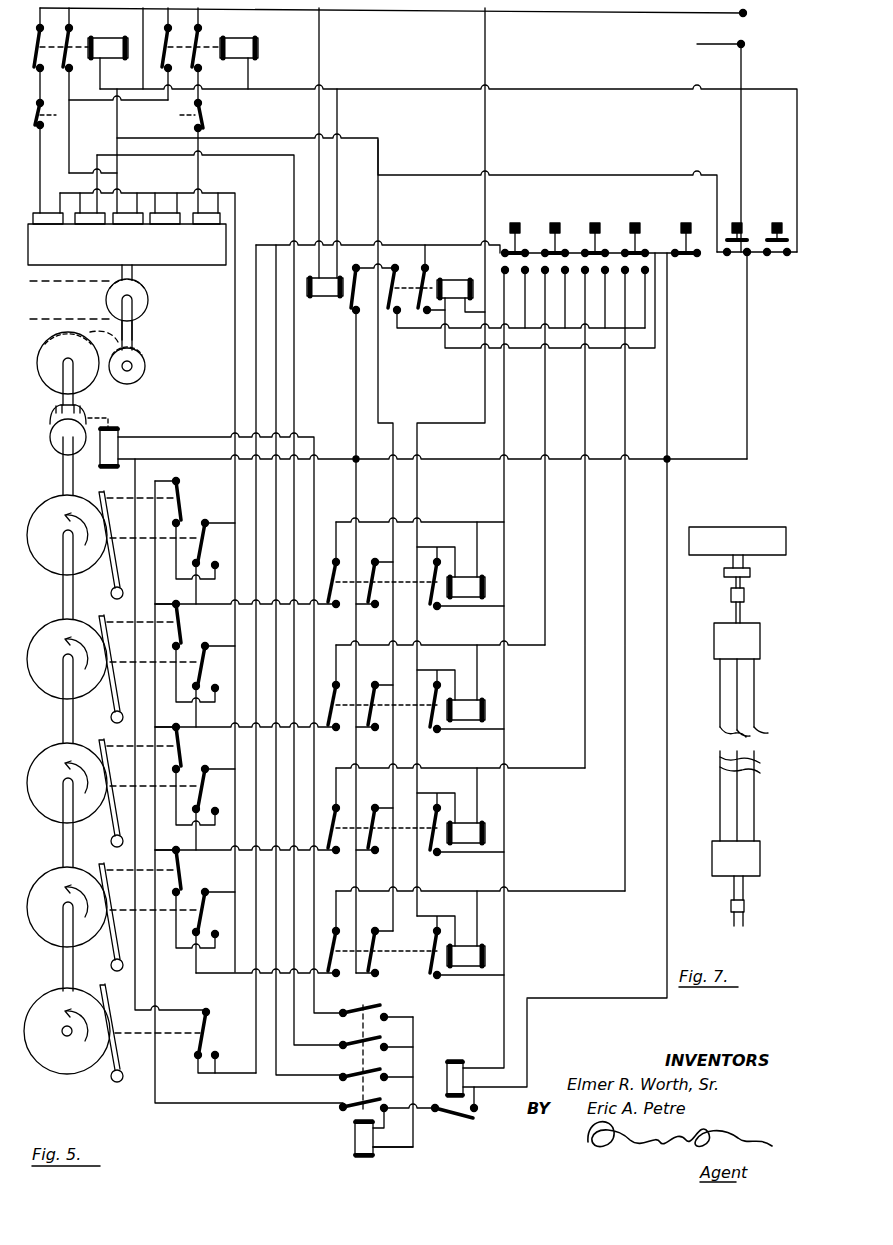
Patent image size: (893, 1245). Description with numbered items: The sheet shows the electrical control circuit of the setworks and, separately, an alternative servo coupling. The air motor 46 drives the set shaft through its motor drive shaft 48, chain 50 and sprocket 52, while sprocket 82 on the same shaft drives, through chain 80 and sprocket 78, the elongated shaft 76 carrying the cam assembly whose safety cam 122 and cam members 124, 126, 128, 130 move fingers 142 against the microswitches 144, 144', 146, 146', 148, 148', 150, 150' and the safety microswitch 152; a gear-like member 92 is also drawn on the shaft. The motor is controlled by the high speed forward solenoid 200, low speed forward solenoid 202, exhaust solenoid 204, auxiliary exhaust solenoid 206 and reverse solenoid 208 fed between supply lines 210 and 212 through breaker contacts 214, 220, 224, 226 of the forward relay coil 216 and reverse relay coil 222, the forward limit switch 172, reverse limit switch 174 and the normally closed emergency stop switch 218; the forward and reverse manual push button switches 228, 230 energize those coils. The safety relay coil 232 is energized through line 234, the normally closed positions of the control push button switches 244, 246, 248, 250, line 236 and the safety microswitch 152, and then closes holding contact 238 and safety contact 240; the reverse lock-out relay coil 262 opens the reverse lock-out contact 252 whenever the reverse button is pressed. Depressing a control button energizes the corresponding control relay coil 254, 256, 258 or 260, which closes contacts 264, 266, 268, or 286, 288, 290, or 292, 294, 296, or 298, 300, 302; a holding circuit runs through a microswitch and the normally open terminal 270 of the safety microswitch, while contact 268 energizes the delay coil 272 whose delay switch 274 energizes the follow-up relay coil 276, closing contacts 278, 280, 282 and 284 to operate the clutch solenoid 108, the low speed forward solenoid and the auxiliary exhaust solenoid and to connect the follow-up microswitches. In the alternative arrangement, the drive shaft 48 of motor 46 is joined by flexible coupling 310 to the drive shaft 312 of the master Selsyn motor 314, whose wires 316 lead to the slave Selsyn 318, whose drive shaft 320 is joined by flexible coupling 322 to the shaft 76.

In FIG. 5, the air motor 46 is at (200, 267).
In FIG. 7, the air motor 46 is at (774, 524).
In FIG. 5, the motor drive shaft 48 is at (137, 330).
In FIG. 7, the motor drive shaft 48 is at (750, 574).
In FIG. 5, the chain 50 is at (74, 280).
In FIG. 5, the sprocket 52 is at (146, 298).
In FIG. 5, the elongated shaft 76 is at (62, 392).
In FIG. 7, the elongated shaft 76 is at (732, 922).
In FIG. 5, the sprocket 78 is at (45, 372).
In FIG. 5, the chain 80 is at (95, 384).
In FIG. 5, the sprocket 82 is at (145, 365).
In FIG. 5, the clutch gear 92 is at (56, 450).
In FIG. 5, the clutch solenoid 108 is at (118, 437).
In FIG. 5, the safety cam 122 is at (50, 1066).
In FIG. 5, the cam member 124 is at (46, 937).
In FIG. 5, the cam member 126 is at (46, 815).
In FIG. 5, the cam member 128 is at (46, 690).
In FIG. 5, the cam member 130 is at (46, 568).
In FIG. 5, the finger 142 is at (112, 570).
In FIG. 5, the microswitch 144 is at (216, 919).
In FIG. 5, the microswitch 144' is at (190, 895).
In FIG. 5, the microswitch 146 is at (216, 796).
In FIG. 5, the microswitch 146' is at (190, 772).
In FIG. 5, the microswitch 148 is at (216, 673).
In FIG. 5, the microswitch 148' is at (190, 649).
In FIG. 5, the microswitch 150 is at (216, 550).
In FIG. 5, the microswitch 150' is at (190, 526).
In FIG. 5, the safety microswitch 152 is at (212, 1012).
In FIG. 5, the forward limit switch 172 is at (34, 108).
In FIG. 5, the reverse limit switch 174 is at (208, 122).
In FIG. 5, the high speed forward solenoid 200 is at (53, 226).
In FIG. 5, the low speed forward solenoid 202 is at (90, 228).
In FIG. 5, the exhaust solenoid 204 is at (130, 226).
In FIG. 5, the auxiliary exhaust solenoid 206 is at (170, 228).
In FIG. 5, the reverse solenoid 208 is at (210, 226).
In FIG. 5, the supply line 210 is at (745, 15).
In FIG. 5, the supply line 212 is at (745, 45).
In FIG. 5, the breaker contact 214 is at (35, 46).
In FIG. 5, the forward relay coil 216 is at (102, 38).
In FIG. 5, the emergency stop switch 218 is at (686, 222).
In FIG. 5, the breaker contact 220 is at (202, 42).
In FIG. 5, the reverse relay coil 222 is at (258, 48).
In FIG. 5, the breaker contact 224 is at (72, 42).
In FIG. 5, the breaker contact 226 is at (172, 42).
In FIG. 5, the forward manual push button switch 228 is at (738, 222).
In FIG. 5, the reverse manual push button switch 230 is at (778, 222).
In FIG. 5, the safety relay coil 232 is at (457, 289).
In FIG. 5, the line 234 is at (470, 352).
In FIG. 5, the line 236 is at (254, 246).
In FIG. 5, the holding contact 238 is at (420, 282).
In FIG. 5, the safety contact 240 is at (388, 314).
In FIG. 5, the control push button switch 244 is at (636, 222).
In FIG. 5, the control push button switch 246 is at (596, 222).
In FIG. 5, the control push button switch 248 is at (556, 222).
In FIG. 5, the control push button switch 250 is at (514, 222).
In FIG. 5, the reverse lock-out contact 252 is at (352, 312).
In FIG. 5, the control relay coil 254 is at (485, 956).
In FIG. 5, the control relay coil 256 is at (485, 832).
In FIG. 5, the control relay coil 258 is at (485, 712).
In FIG. 5, the control relay coil 260 is at (485, 588).
In FIG. 5, the reverse lock-out relay coil 262 is at (330, 296).
In FIG. 5, the holding contact 264 is at (340, 971).
In FIG. 5, the contact 266 is at (370, 927).
In FIG. 5, the contact 268 is at (430, 977).
In FIG. 5, the terminal 270 is at (217, 1058).
In FIG. 5, the delay coil 272 is at (458, 1060).
In FIG. 5, the delay switch 274 is at (465, 1122).
In FIG. 5, the follow-up relay coil 276 is at (360, 1158).
In FIG. 5, the contact 278 is at (368, 1008).
In FIG. 5, the contact 280 is at (352, 1038).
In FIG. 5, the contact 282 is at (352, 1070).
In FIG. 5, the contact 284 is at (352, 1100).
In FIG. 5, the contact 286 is at (340, 846).
In FIG. 5, the contact 288 is at (370, 804).
In FIG. 5, the contact 290 is at (430, 852).
In FIG. 5, the contact 292 is at (340, 723).
In FIG. 5, the contact 294 is at (370, 681).
In FIG. 5, the contact 296 is at (430, 729).
In FIG. 5, the contact 298 is at (340, 600).
In FIG. 5, the contact 300 is at (370, 558).
In FIG. 5, the contact 302 is at (430, 606).
In FIG. 7, the flexible coupling 310 is at (731, 594).
In FIG. 7, the drive shaft 312 is at (745, 614).
In FIG. 7, the master Selsyn motor 314 is at (760, 648).
In FIG. 7, the wires 316 is at (755, 762).
In FIG. 7, the slave Selsyn 318 is at (774, 840).
In FIG. 7, the drive shaft 320 is at (745, 888).
In FIG. 7, the flexible coupling 322 is at (745, 910).